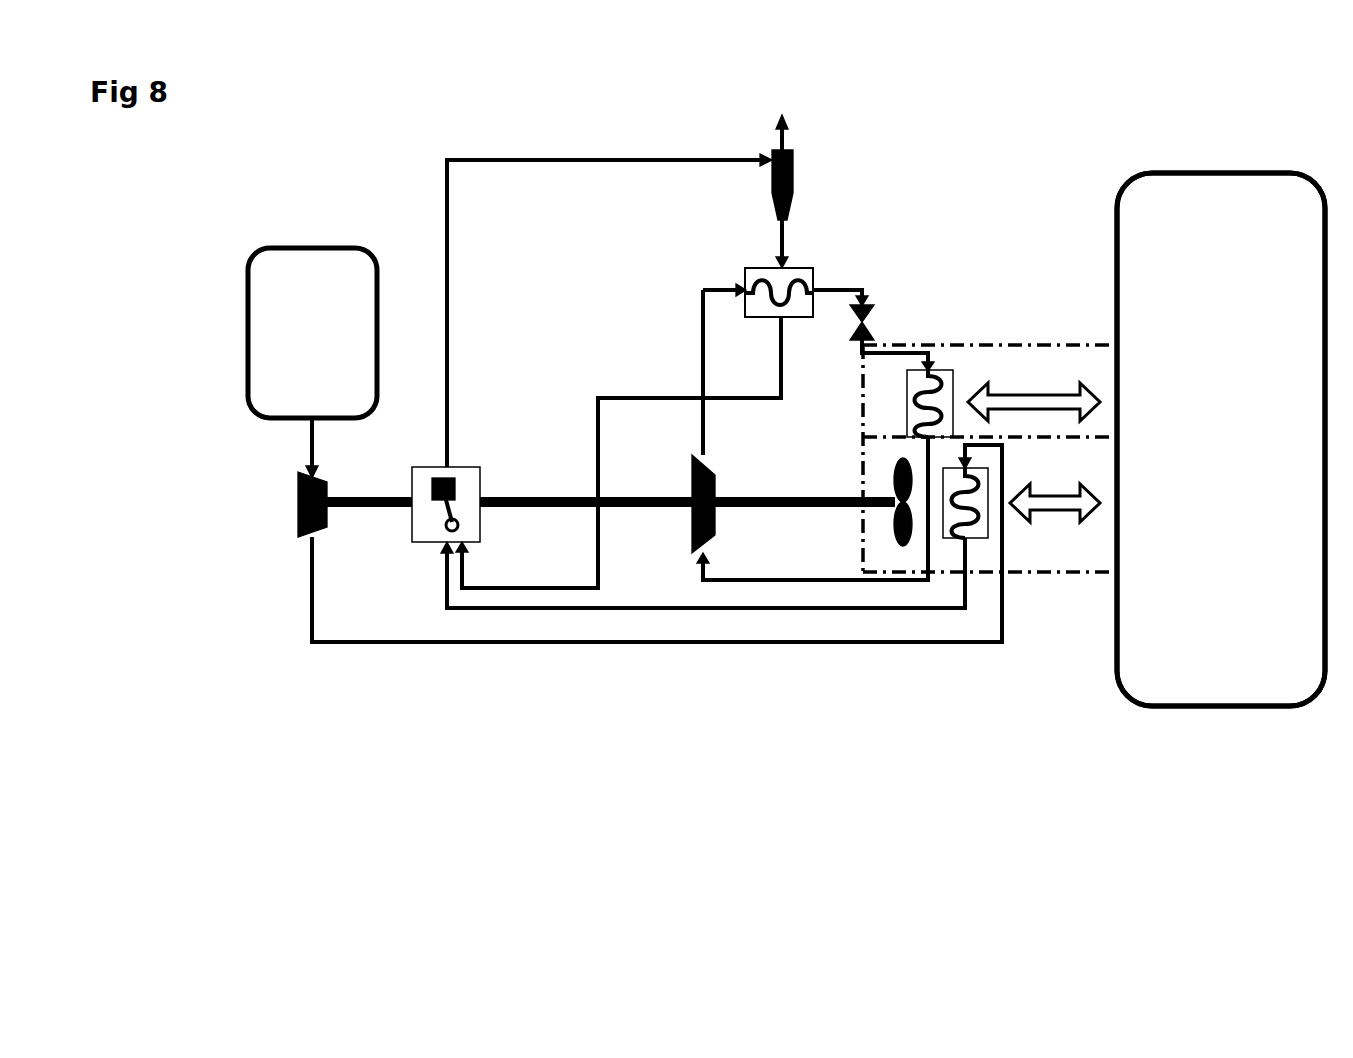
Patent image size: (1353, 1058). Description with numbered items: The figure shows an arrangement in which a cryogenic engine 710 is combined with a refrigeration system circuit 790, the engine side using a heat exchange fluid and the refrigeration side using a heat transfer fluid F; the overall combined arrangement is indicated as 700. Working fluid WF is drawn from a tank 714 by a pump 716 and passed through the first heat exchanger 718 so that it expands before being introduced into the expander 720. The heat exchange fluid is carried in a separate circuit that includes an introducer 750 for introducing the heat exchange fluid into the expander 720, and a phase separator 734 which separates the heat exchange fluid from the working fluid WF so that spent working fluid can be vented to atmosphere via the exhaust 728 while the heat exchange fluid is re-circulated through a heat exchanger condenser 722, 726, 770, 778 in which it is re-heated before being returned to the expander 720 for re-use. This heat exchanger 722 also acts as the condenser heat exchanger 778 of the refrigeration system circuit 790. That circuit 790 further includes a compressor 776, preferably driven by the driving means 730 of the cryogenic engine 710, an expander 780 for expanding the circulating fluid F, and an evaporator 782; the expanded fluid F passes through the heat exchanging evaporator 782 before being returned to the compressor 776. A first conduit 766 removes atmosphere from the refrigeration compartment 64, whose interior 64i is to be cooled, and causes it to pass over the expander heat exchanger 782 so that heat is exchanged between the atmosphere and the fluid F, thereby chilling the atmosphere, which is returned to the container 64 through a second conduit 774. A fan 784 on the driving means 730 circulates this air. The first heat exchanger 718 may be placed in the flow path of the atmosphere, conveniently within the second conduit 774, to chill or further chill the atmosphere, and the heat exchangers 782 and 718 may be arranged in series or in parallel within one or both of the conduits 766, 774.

The refrigeration compartment 64 is at (1180, 193).
The interior of the refrigeration compartment 64i is at (1228, 195).
The heat pump system 700 is at (433, 671).
The cryogenic engine 710 is at (262, 626).
The fuel tank 714 is at (316, 265).
The fuel pump 716 is at (298, 492).
The first heat exchanger 718 is at (982, 530).
The expander 720 is at (422, 470).
The heat exchanger condenser 722 is at (810, 280).
The heat exchanger condenser 726 is at (779, 292).
The heat exchanger condenser 770 is at (779, 292).
The exhaust 728 is at (787, 127).
The driving means 730 is at (785, 508).
The phase separator 734 is at (793, 160).
The introducer 750 is at (466, 550).
The first conduit 766 is at (1037, 358).
The second conduit 774 is at (1058, 562).
The compressor 776 is at (692, 533).
The condenser heat exchanger 778 is at (805, 273).
The expander 780 is at (883, 308).
The evaporator 782 is at (943, 377).
The fan 784 is at (893, 542).
The refrigeration system circuit 790 is at (818, 582).